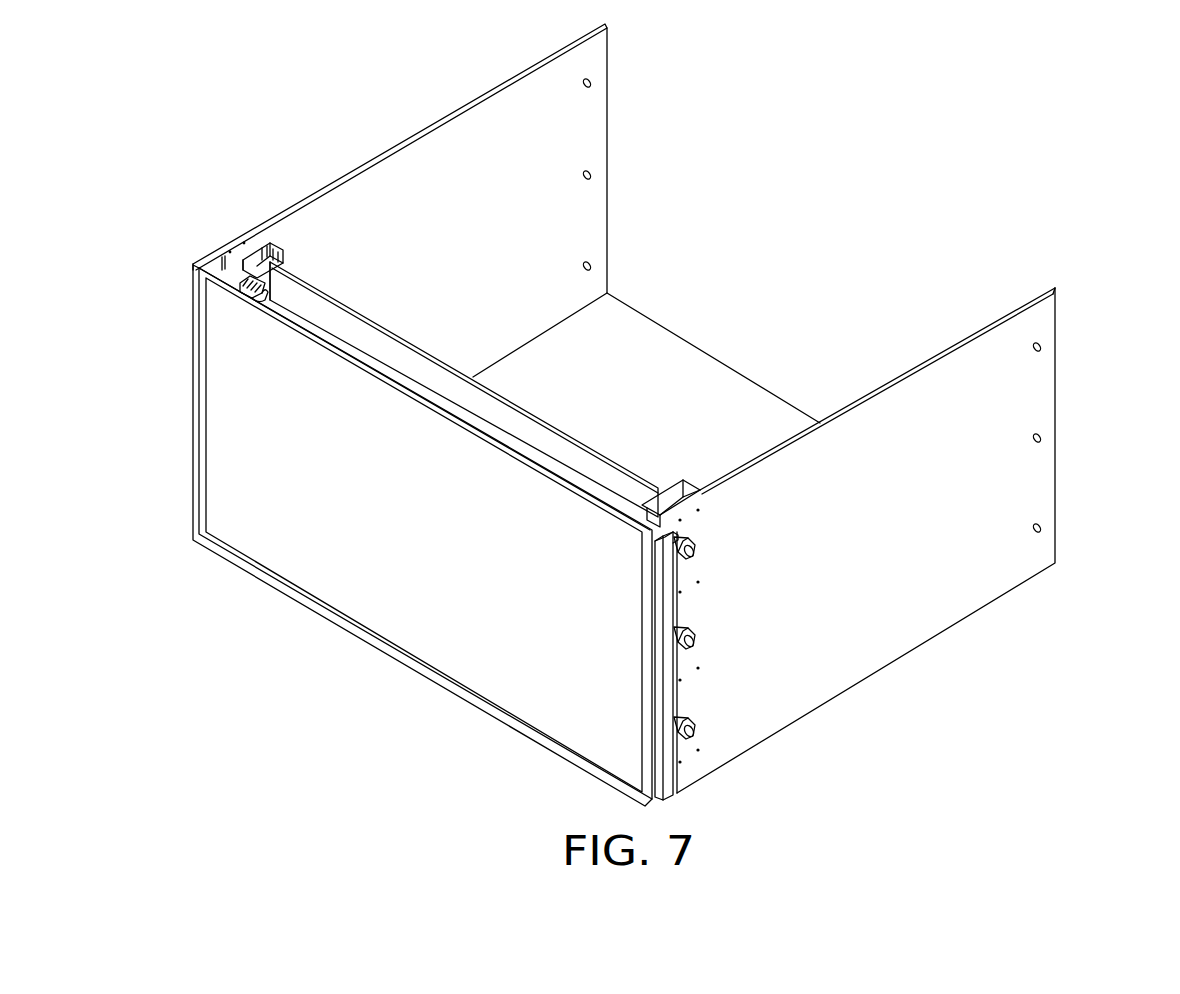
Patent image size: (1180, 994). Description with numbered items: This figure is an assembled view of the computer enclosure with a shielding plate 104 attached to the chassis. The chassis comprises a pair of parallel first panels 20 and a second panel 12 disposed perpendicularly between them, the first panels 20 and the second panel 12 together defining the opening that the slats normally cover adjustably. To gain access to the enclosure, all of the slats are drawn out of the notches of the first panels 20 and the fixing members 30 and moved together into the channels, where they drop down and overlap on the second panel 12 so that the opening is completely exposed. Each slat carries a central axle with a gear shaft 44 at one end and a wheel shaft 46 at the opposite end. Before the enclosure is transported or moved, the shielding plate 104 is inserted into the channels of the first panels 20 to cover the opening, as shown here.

The second panel 12 is at (663, 353).
The first panels 20 is at (573, 208).
The fixing members 30 is at (277, 240).
The gear shaft 44 is at (240, 282).
The wheel shaft 46 is at (700, 738).
The shielding plate 104 is at (427, 592).